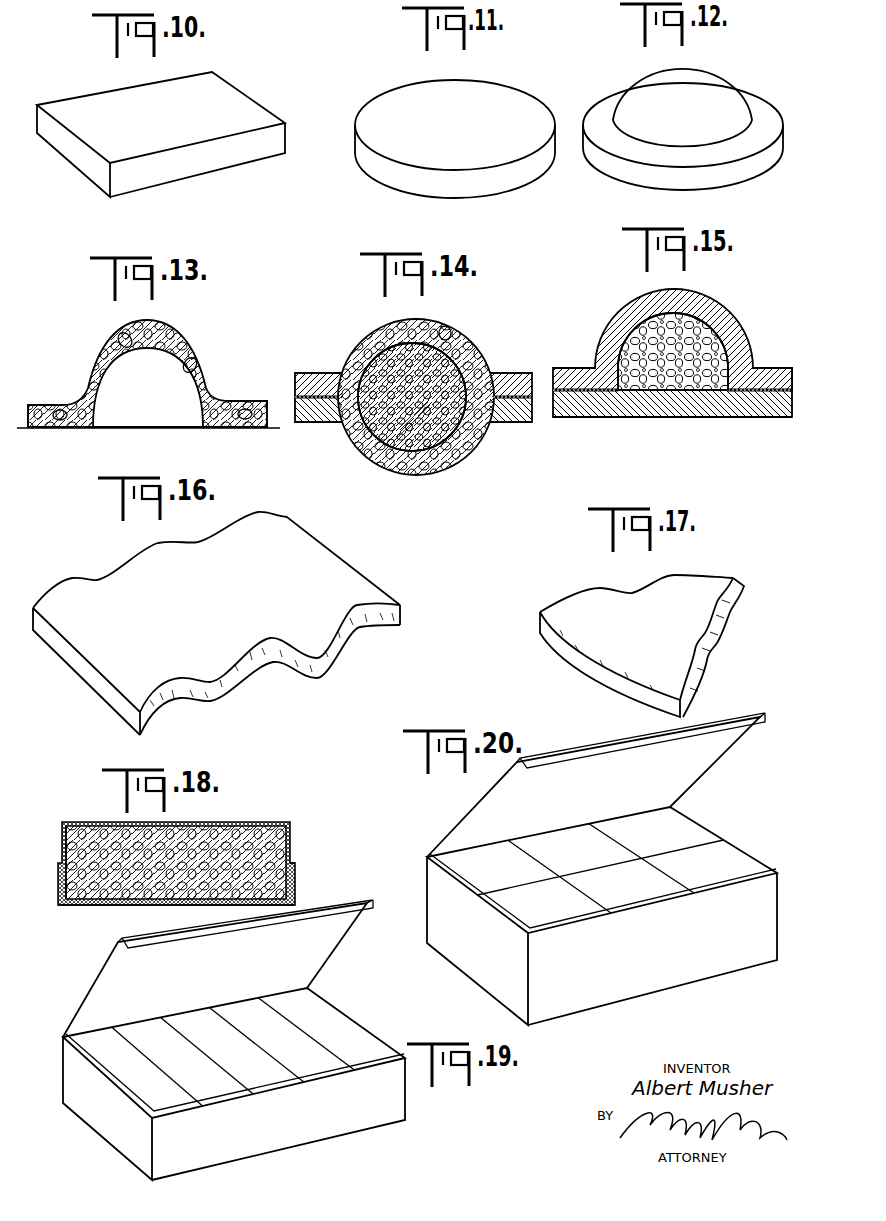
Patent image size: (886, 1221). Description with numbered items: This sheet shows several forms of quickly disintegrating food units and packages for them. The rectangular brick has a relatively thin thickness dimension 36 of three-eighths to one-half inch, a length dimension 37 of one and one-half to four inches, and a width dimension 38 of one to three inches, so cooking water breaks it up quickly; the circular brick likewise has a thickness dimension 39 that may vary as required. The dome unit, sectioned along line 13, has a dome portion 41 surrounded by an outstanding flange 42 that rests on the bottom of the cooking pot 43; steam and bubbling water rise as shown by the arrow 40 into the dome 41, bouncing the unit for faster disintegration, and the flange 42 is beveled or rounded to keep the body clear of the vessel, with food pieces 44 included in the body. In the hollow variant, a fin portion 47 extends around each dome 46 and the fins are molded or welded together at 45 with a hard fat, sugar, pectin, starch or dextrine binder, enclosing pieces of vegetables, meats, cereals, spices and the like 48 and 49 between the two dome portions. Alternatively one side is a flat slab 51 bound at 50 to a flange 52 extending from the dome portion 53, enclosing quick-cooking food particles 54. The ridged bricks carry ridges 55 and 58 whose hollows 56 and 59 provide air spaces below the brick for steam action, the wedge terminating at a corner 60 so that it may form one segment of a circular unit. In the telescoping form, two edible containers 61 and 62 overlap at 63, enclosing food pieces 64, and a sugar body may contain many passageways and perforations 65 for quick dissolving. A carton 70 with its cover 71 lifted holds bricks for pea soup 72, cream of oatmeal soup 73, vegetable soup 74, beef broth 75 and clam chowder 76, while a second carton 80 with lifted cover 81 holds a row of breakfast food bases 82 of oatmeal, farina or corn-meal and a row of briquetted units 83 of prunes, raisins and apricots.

In FIG. 10, the thickness dimension 36 is at (287, 122).
In FIG. 10, the length dimension 37 is at (283, 173).
In FIG. 10, the width dimension 38 is at (300, 120).
In FIG. 11, the thickness dimension 39 is at (457, 145).
In FIG. 12, the section line 13 is at (684, 201).
In FIG. 13, the arrow 40 is at (147, 388).
In FIG. 12, the dome portion 41 is at (648, 82).
In FIG. 13, the dome portion 41 is at (190, 340).
In FIG. 12, the flange 42 is at (598, 146).
In FIG. 13, the flange 42 is at (245, 402).
In FIG. 13, the cooking pot 43 is at (180, 429).
In FIG. 13, the food pieces 44 is at (102, 348).
In FIG. 14, the food pieces 44 is at (451, 329).
In FIG. 14, the joint 45 is at (527, 420).
In FIG. 14, the dome 46 is at (453, 462).
In FIG. 14, the fin portion 47 is at (498, 425).
In FIG. 14, the food pieces 48 is at (395, 442).
In FIG. 14, the food pieces 49 is at (413, 452).
In FIG. 15, the binding joint 50 is at (770, 392).
In FIG. 15, the flat slab 51 is at (678, 408).
In FIG. 15, the flange 52 is at (775, 368).
In FIG. 15, the dome portion 53 is at (722, 306).
In FIG. 15, the food particles 54 is at (720, 331).
In FIG. 16, the ridges 55 is at (72, 578).
In FIG. 16, the hollows 56 is at (363, 628).
In FIG. 17, the ridges 58 is at (673, 575).
In FIG. 17, the hollows 59 is at (727, 610).
In FIG. 17, the corner 60 is at (737, 590).
In FIG. 18, the container 61 is at (290, 830).
In FIG. 18, the container 62 is at (297, 885).
In FIG. 18, the telescoping portion 63 is at (295, 863).
In FIG. 18, the food pieces 64 is at (83, 840).
In FIG. 18, the passageways and perforations 65 is at (127, 903).
In FIG. 19, the carton 70 is at (103, 1130).
In FIG. 19, the cover 71 is at (328, 942).
In FIG. 19, the pea soup brick 72 is at (177, 1102).
In FIG. 19, the cream of oatmeal soup brick 73 is at (235, 1090).
In FIG. 19, the vegetable soup brick 74 is at (287, 1083).
In FIG. 19, the beef broth brick 75 is at (332, 1070).
In FIG. 19, the clam chowder brick 76 is at (383, 1063).
In FIG. 20, the carton 80 is at (715, 965).
In FIG. 20, the cover 81 is at (693, 767).
In FIG. 20, the breakfast food bases 82 is at (688, 835).
In FIG. 20, the briquetted fruit units 83 is at (743, 868).